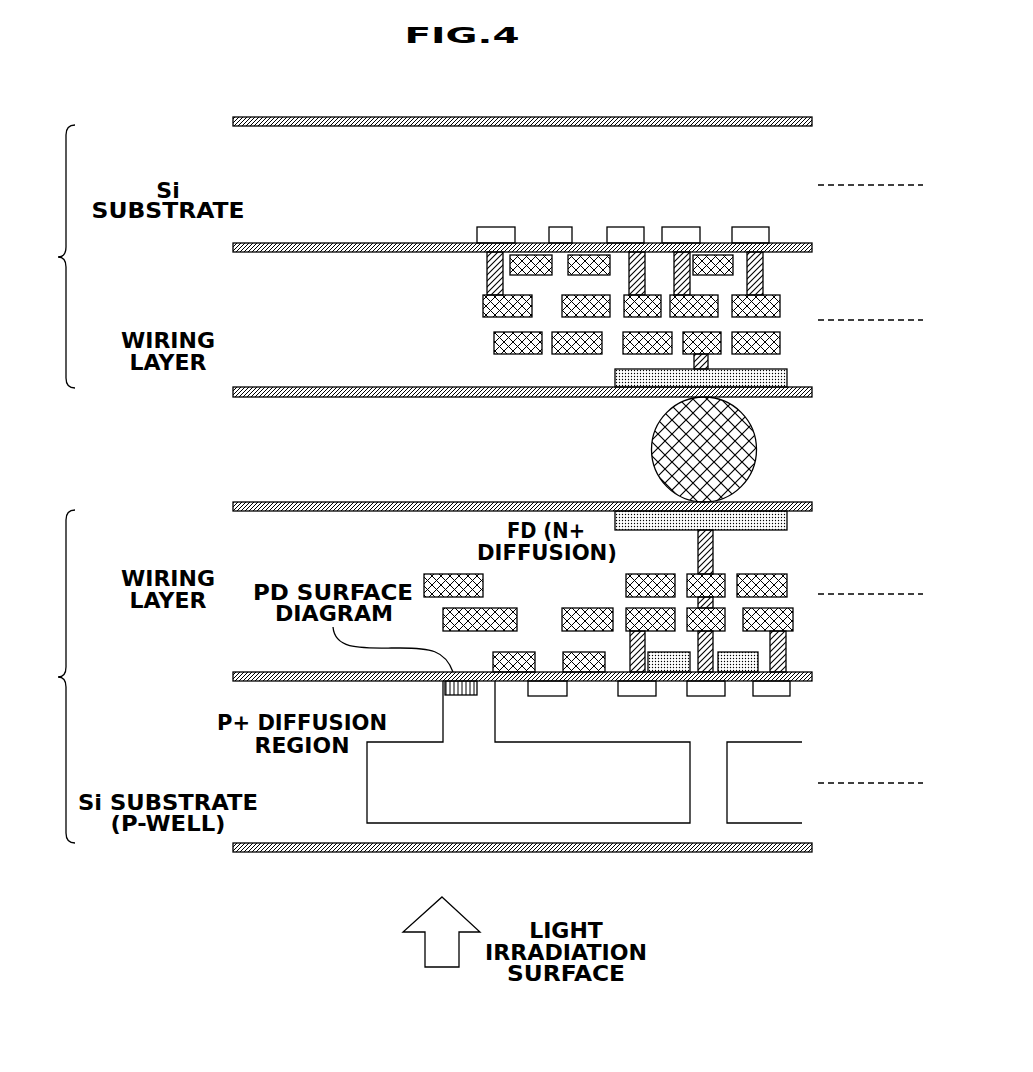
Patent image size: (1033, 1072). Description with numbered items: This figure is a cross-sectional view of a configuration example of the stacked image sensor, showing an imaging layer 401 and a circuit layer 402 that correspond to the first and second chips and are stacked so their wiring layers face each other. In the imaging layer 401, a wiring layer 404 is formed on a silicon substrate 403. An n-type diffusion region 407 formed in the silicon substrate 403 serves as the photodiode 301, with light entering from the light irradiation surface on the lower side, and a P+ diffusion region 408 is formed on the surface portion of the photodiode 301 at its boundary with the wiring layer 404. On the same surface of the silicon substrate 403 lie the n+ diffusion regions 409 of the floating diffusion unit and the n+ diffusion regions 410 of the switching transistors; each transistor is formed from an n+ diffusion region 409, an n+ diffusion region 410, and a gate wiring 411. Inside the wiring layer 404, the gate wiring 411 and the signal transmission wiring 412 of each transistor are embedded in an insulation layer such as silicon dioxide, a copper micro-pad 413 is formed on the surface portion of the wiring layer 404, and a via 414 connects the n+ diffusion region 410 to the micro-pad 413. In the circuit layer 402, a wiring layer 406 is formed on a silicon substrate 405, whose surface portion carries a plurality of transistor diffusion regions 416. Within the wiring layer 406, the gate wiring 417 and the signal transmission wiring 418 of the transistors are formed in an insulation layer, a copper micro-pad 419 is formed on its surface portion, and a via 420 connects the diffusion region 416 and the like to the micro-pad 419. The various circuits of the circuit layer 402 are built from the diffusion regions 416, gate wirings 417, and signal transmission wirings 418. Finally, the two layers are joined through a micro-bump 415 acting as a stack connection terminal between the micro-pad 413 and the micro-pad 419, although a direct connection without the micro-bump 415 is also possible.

The photodiode 301 is at (661, 828).
The imaging layer 401 is at (41, 676).
The circuit layer 402 is at (41, 256).
The silicon substrate 403 is at (278, 779).
The wiring layer 404 is at (278, 554).
The silicon substrate 405 is at (278, 166).
The wiring layer 406 is at (278, 316).
The n-type diffusion region 407 is at (548, 823).
The P+ diffusion region 408 is at (440, 687).
The n+ diffusion region 409 is at (548, 688).
The n+ diffusion region 410 is at (705, 696).
The gate wiring 411 is at (786, 655).
The signal transmission wiring 412 is at (450, 574).
The micro-pad 413 is at (787, 520).
The via 414 is at (713, 548).
The micro-bump 415 is at (757, 448).
The diffusion regions 416 is at (498, 227).
The gate wiring 417 is at (762, 268).
The signal transmission wiring 418 is at (494, 343).
The micro-pad 419 is at (787, 377).
The via 420 is at (487, 270).